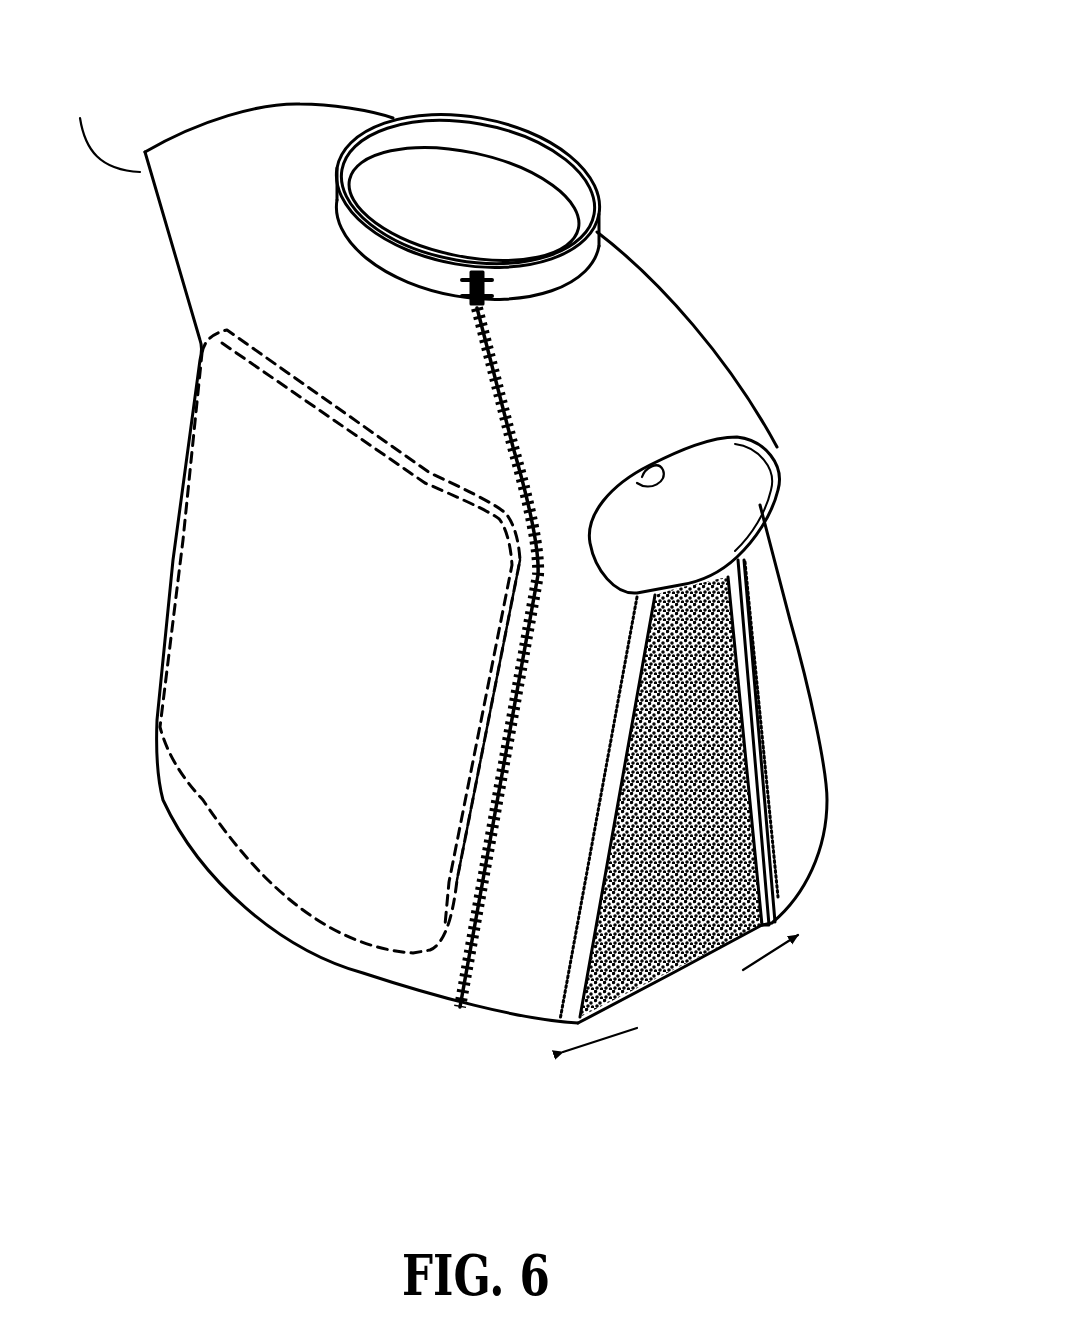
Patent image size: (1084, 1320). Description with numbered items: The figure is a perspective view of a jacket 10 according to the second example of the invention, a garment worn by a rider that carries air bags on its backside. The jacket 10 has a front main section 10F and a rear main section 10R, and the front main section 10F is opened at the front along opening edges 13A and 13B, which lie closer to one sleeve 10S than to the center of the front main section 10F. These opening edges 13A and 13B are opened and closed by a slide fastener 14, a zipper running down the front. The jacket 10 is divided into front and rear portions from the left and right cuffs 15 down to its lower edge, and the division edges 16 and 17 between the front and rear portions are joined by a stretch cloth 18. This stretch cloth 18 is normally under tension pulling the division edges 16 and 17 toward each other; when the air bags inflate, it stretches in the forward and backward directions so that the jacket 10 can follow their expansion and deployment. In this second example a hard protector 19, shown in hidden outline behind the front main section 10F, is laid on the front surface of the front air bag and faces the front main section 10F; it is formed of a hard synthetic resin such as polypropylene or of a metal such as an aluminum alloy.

The jacket 10 is at (700, 289).
The sleeve 10S is at (147, 150).
The front main section 10F is at (380, 666).
The rear main section 10R is at (803, 640).
The opening edge 13A is at (467, 877).
The opening edge 13B is at (497, 877).
The slide fastener 14 is at (500, 456).
The cuff 15 is at (637, 483).
The division edge 16 is at (613, 740).
The division edge 17 is at (760, 790).
The stretch cloth 18 is at (677, 935).
The hard protector 19 is at (197, 710).